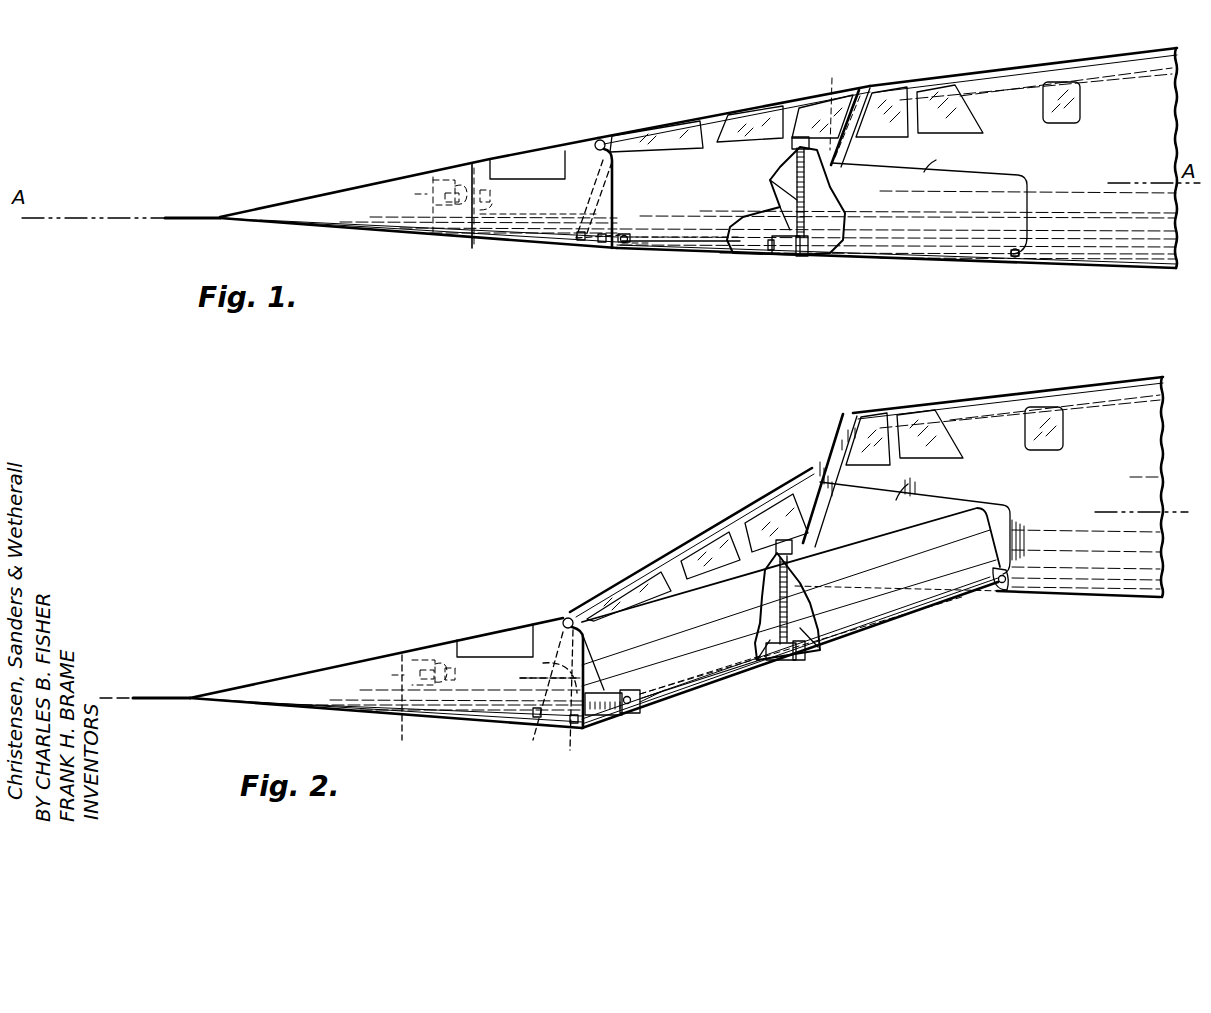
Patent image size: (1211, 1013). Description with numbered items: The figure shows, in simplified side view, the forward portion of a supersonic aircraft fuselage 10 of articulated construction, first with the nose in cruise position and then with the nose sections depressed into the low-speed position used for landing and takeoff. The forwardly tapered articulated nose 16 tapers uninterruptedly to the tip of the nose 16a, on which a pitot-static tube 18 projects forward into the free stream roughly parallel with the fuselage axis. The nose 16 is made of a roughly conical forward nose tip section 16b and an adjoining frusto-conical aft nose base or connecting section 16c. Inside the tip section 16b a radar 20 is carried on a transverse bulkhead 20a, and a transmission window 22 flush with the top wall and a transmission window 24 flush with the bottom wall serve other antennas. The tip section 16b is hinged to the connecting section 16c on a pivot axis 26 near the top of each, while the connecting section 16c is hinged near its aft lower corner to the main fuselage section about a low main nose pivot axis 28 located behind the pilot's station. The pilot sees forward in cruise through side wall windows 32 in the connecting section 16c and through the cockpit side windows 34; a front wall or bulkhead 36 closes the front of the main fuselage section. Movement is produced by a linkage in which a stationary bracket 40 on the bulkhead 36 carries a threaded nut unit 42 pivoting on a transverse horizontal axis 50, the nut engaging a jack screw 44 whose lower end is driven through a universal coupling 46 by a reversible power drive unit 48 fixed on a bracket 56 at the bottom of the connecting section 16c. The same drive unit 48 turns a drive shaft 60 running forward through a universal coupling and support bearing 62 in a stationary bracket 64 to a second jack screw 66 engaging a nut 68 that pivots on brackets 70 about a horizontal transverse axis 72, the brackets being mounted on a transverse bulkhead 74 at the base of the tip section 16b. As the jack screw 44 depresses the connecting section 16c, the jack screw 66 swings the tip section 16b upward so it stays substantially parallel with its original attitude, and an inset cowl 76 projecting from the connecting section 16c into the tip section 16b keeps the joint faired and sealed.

In FIG. 1, the fuselage 10 is at (671, 180).
In FIG. 2, the fuselage 10 is at (648, 558).
In FIG. 1, the nose 16 is at (517, 199).
In FIG. 2, the nose 16 is at (473, 626).
In FIG. 1, the tip of the nose 16a is at (232, 212).
In FIG. 2, the tip of the nose 16a is at (212, 688).
In FIG. 1, the forward nose tip section 16b is at (340, 232).
In FIG. 2, the forward nose tip section 16b is at (340, 660).
In FIG. 1, the aft nose base or connecting section 16c is at (734, 116).
In FIG. 2, the aft nose base or connecting section 16c is at (692, 544).
In FIG. 1, the pitot-static tube 18 is at (186, 215).
In FIG. 2, the pitot-static tube 18 is at (160, 694).
In FIG. 1, the radar 20 is at (446, 240).
In FIG. 2, the radar 20 is at (404, 735).
In FIG. 1, the transverse bulkhead 20a is at (460, 172).
In FIG. 2, the transverse bulkhead 20a is at (426, 655).
In FIG. 1, the transmission window 22 is at (556, 150).
In FIG. 2, the transmission window 22 is at (487, 636).
In FIG. 1, the transmission window 24 is at (522, 250).
In FIG. 2, the transmission window 24 is at (486, 722).
In FIG. 1, the pivot axis 26 is at (604, 138).
In FIG. 2, the pivot axis 26 is at (572, 616).
In FIG. 1, the main nose pivot axis 28 is at (1017, 259).
In FIG. 2, the main nose pivot axis 28 is at (1000, 590).
In FIG. 1, the side wall windows 32 is at (798, 108).
In FIG. 2, the side wall windows 32 is at (676, 586).
In FIG. 1, the cockpit side windows 34 is at (930, 90).
In FIG. 2, the cockpit side windows 34 is at (888, 464).
In FIG. 1, the front wall or bulkhead 36 is at (836, 100).
In FIG. 2, the front wall or bulkhead 36 is at (810, 464).
In FIG. 1, the stationary bracket 40 is at (792, 220).
In FIG. 2, the stationary bracket 40 is at (789, 617).
In FIG. 1, the threaded nut unit 42 is at (783, 188).
In FIG. 2, the threaded nut unit 42 is at (770, 570).
In FIG. 1, the jack screw 44 is at (796, 152).
In FIG. 2, the jack screw 44 is at (768, 604).
In FIG. 1, the universal coupling 46 is at (766, 214).
In FIG. 2, the universal coupling 46 is at (812, 652).
In FIG. 1, the reversible power drive unit 48 is at (785, 257).
In FIG. 2, the reversible power drive unit 48 is at (776, 663).
In FIG. 1, the transverse horizontal axis 50 is at (835, 236).
In FIG. 2, the transverse horizontal axis 50 is at (794, 550).
In FIG. 1, the bracket 56 is at (801, 258).
In FIG. 2, the bracket 56 is at (798, 662).
In FIG. 1, the drive shaft 60 is at (736, 248).
In FIG. 2, the drive shaft 60 is at (708, 678).
In FIG. 1, the universal coupling and support bearing 62 is at (628, 234).
In FIG. 2, the universal coupling and support bearing 62 is at (640, 692).
In FIG. 1, the stationary bracket 64 is at (626, 246).
In FIG. 2, the stationary bracket 64 is at (636, 690).
In FIG. 2, the jack screw 66 is at (615, 716).
In FIG. 1, the nut 68 is at (612, 210).
In FIG. 2, the nut 68 is at (556, 690).
In FIG. 1, the brackets 70 is at (579, 244).
In FIG. 2, the brackets 70 is at (540, 720).
In FIG. 1, the horizontal transverse axis 72 is at (601, 244).
In FIG. 2, the horizontal transverse axis 72 is at (574, 724).
In FIG. 1, the transverse bulkhead 74 is at (622, 248).
In FIG. 2, the transverse bulkhead 74 is at (636, 712).
In FIG. 2, the inset cowl 76 is at (596, 656).